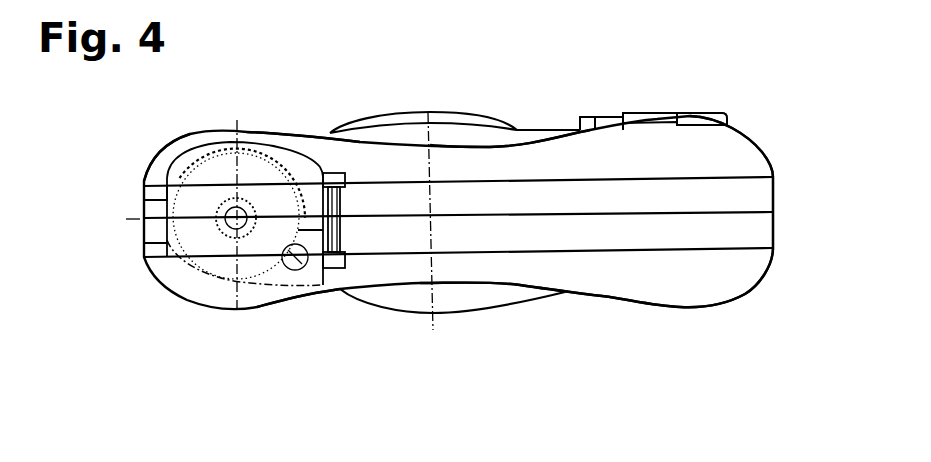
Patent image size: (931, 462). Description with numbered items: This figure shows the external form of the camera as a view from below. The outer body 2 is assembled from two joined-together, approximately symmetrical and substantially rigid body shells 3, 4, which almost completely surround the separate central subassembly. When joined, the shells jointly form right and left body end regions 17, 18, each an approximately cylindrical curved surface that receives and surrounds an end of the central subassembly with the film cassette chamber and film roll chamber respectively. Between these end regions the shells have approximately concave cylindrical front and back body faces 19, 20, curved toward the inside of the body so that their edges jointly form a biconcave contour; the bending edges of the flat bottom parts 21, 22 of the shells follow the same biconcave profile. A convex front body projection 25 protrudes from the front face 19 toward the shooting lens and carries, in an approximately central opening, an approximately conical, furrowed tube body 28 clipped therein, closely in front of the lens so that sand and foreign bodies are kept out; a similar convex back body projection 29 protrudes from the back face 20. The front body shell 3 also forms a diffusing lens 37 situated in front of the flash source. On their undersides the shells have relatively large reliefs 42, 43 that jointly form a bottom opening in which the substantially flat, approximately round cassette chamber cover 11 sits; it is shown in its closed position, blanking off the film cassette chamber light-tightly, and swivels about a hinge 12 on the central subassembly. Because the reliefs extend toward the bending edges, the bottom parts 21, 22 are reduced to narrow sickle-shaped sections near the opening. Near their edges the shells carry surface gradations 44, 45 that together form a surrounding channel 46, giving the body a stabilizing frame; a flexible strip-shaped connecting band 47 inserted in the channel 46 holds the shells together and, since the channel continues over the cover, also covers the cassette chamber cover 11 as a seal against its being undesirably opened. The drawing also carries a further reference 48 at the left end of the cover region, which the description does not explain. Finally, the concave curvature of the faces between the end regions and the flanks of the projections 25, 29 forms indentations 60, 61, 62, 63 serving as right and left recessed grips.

The outer body 2 is at (653, 333).
The front body shell 3 is at (513, 160).
The back body shell 4 is at (577, 127).
The cassette chamber cover 11 is at (210, 303).
The hinge 12 is at (350, 228).
The right body end region 17 is at (753, 146).
The left body end region 18 is at (168, 146).
The front concave cylindrical body face 19 is at (473, 145).
The back concave cylindrical body face 20 is at (457, 282).
The bottom part of front body shell 21 is at (735, 130).
The bottom part of back body shell 22 is at (730, 270).
The front body projection 25 is at (386, 117).
The tube body 28 is at (420, 112).
The back body projection 29 is at (403, 313).
The diffusing lens 37 is at (627, 118).
The relief of front body shell 42 is at (218, 148).
The relief of back body shell 43 is at (260, 303).
The surface gradation of front body shell 44 is at (660, 177).
The surface gradation of back body shell 45 is at (695, 250).
The surrounding channel 46 is at (777, 223).
The connecting band 47 is at (757, 188).
The longitudinal axis 48 is at (197, 240).
The indentation 60 is at (315, 136).
The indentation 61 is at (540, 130).
The indentation 62 is at (327, 300).
The indentation 63 is at (593, 297).